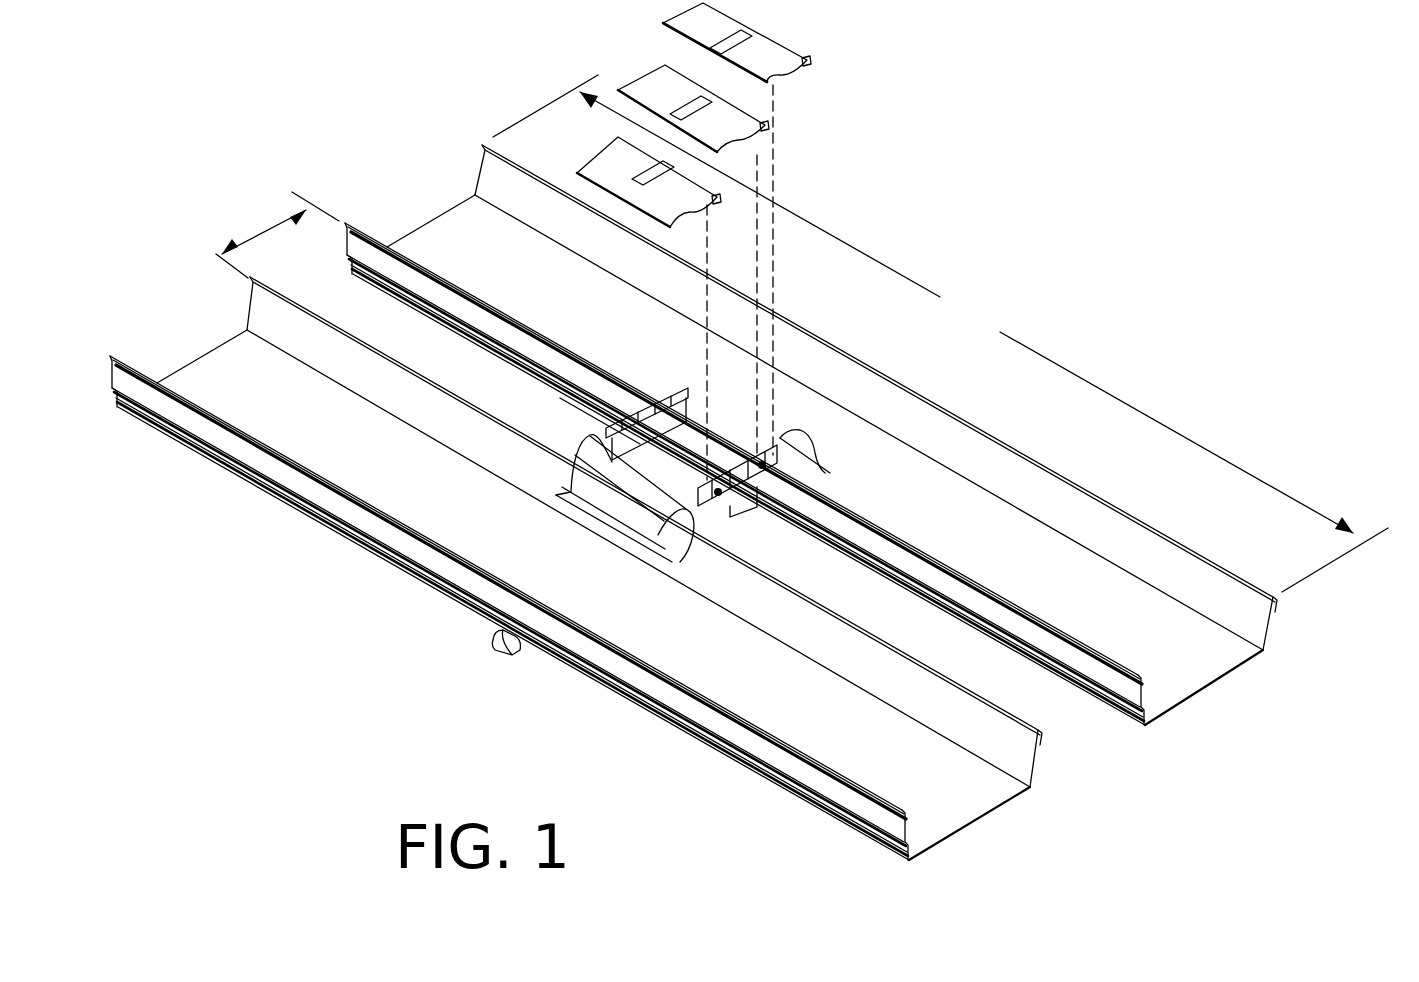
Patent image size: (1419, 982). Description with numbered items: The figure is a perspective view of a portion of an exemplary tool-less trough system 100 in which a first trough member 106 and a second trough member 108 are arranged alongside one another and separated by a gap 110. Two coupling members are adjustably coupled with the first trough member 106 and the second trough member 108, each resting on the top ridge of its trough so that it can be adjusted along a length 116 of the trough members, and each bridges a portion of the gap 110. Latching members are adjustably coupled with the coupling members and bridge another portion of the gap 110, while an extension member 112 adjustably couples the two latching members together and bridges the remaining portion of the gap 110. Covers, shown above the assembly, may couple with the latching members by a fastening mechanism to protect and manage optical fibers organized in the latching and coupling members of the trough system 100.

The trough system 100 is at (202, 112).
The first trough member 106 is at (470, 578).
The second trough member 108 is at (800, 330).
The gap 110 is at (255, 218).
The extension member 112 is at (598, 412).
The length 116 is at (940, 333).